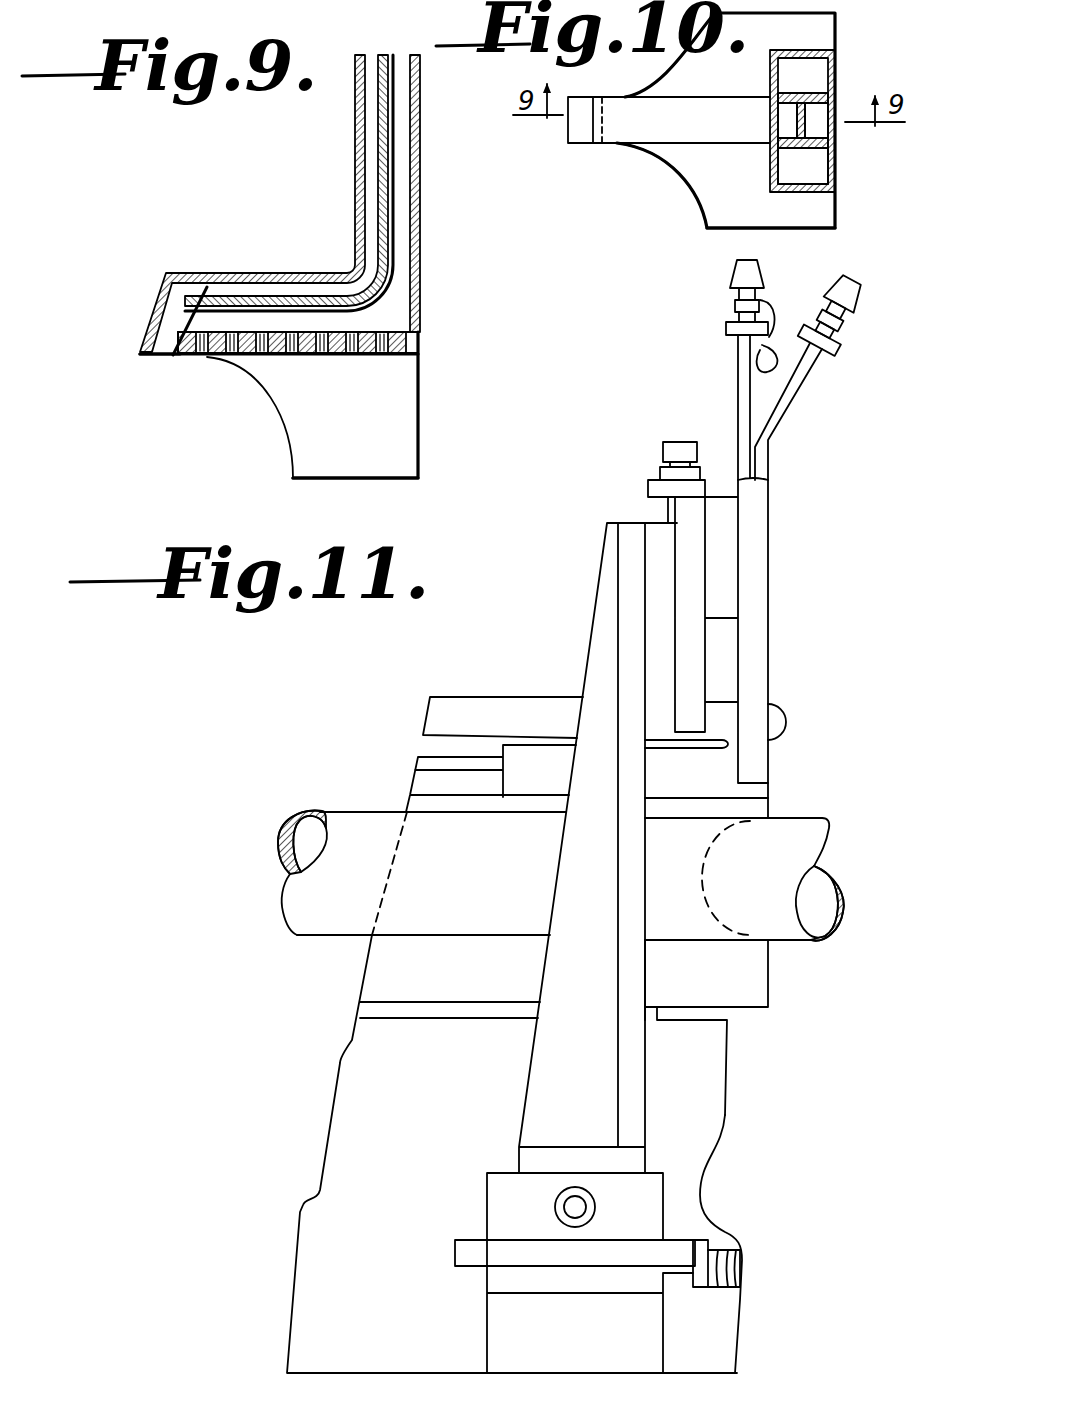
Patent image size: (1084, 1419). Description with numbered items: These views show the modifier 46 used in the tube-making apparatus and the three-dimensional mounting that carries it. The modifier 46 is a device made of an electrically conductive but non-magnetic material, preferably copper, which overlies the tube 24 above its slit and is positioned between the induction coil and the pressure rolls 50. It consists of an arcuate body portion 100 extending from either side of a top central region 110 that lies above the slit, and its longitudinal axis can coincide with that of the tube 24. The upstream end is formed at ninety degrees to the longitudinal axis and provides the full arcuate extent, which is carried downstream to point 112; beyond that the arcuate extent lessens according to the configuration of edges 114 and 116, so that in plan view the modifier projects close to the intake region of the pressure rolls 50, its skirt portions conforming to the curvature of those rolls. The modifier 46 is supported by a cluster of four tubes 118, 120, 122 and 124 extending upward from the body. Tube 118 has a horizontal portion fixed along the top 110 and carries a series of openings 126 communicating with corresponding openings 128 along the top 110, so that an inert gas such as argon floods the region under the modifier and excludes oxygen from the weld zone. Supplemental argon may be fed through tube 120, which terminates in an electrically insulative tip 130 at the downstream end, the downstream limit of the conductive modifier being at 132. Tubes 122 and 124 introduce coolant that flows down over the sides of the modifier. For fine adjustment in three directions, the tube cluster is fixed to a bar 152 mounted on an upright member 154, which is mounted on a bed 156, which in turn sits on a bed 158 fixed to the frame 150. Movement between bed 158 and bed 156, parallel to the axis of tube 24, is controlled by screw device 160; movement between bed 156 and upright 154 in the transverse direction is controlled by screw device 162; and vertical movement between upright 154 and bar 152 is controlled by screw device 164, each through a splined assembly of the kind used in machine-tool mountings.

In FIG. 11, the tube 24 is at (358, 818).
In FIG. 9, the modifier 46 is at (318, 256).
In FIG. 10, the modifier 46 is at (612, 166).
In FIG. 11, the modifier 46 is at (692, 923).
In FIG. 11, the pressure rolls 50 is at (407, 790).
In FIG. 9, the arcuate body portion 100 is at (424, 406).
In FIG. 10, the arcuate body portion 100 is at (724, 168).
In FIG. 9, the top central region 110 is at (420, 345).
In FIG. 9, the point 112 is at (284, 482).
In FIG. 10, the point 112 is at (702, 226).
In FIG. 10, the edge 114 is at (650, 152).
In FIG. 9, the edge 116 is at (272, 410).
In FIG. 10, the edge 116 is at (652, 82).
In FIG. 9, the tube 118 is at (404, 92).
In FIG. 10, the tube 118 is at (817, 130).
In FIG. 11, the tube 118 is at (790, 402).
In FIG. 9, the tube 120 is at (356, 113).
In FIG. 10, the tube 120 is at (797, 118).
In FIG. 11, the tube 120 is at (740, 375).
In FIG. 10, the tube 122 is at (810, 173).
In FIG. 10, the tube 124 is at (840, 56).
In FIG. 11, the tube 124 is at (770, 382).
In FIG. 9, the openings 126 is at (377, 322).
In FIG. 9, the openings 128 is at (342, 385).
In FIG. 9, the electrically insulative tip 130 is at (232, 273).
In FIG. 9, the downstream limit 132 is at (170, 356).
In FIG. 10, the downstream limit 132 is at (600, 144).
In FIG. 11, the frame 150 is at (388, 1340).
In FIG. 11, the bar 152 is at (718, 500).
In FIG. 11, the upright member 154 is at (606, 593).
In FIG. 11, the bed 156 is at (510, 1192).
In FIG. 11, the bed 158 is at (502, 1330).
In FIG. 11, the screw device 160 is at (742, 1260).
In FIG. 11, the screw device 162 is at (555, 1206).
In FIG. 11, the screw device 164 is at (662, 455).